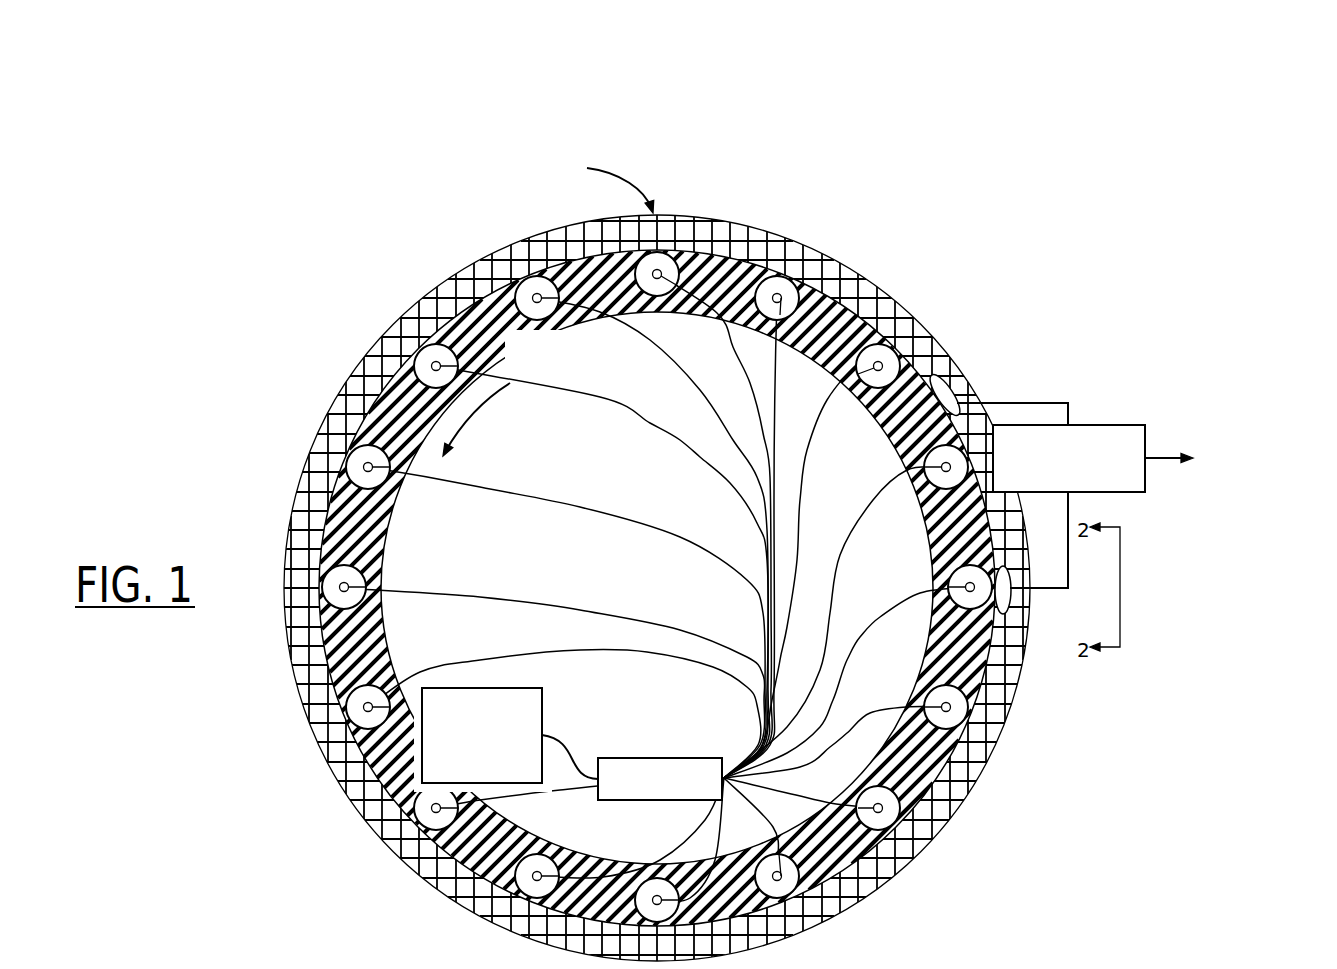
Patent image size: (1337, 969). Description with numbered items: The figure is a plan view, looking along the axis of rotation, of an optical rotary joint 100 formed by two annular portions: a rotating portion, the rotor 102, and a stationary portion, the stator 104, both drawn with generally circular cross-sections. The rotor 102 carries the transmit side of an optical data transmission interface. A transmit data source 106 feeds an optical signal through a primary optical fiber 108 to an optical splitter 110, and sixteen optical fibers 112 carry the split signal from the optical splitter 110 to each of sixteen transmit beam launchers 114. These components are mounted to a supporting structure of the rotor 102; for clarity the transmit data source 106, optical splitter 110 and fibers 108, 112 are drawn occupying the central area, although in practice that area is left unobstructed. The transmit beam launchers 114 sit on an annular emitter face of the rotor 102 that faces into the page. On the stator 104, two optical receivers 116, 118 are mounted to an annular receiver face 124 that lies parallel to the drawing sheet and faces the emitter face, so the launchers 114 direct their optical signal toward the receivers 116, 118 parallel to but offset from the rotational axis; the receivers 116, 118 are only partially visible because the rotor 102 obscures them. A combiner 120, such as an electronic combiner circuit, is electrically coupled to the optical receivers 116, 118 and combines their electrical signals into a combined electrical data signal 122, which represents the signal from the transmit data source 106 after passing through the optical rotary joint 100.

The optical rotary joint 100 is at (772, 136).
The rotor 102 is at (372, 758).
The stator 104 is at (720, 222).
The transmit data source 106 is at (537, 712).
The primary optical fiber 108 is at (575, 758).
The optical splitter 110 is at (655, 758).
The optical fibers 112 is at (747, 793).
The transmit beam launchers 114 is at (806, 296).
The optical receiver 116 is at (1003, 626).
The optical receiver 118 is at (949, 367).
The combiner 120 is at (1117, 421).
The combined electrical data signal 122 is at (1165, 446).
The receiver face 124 is at (769, 249).